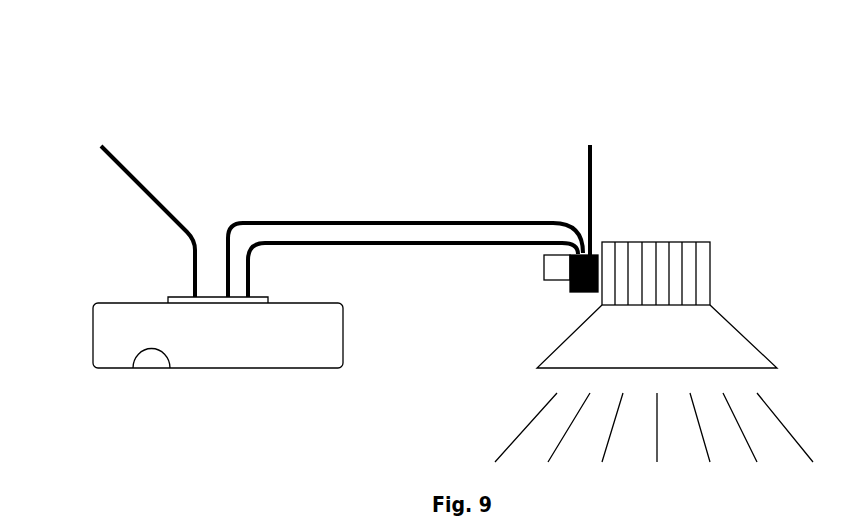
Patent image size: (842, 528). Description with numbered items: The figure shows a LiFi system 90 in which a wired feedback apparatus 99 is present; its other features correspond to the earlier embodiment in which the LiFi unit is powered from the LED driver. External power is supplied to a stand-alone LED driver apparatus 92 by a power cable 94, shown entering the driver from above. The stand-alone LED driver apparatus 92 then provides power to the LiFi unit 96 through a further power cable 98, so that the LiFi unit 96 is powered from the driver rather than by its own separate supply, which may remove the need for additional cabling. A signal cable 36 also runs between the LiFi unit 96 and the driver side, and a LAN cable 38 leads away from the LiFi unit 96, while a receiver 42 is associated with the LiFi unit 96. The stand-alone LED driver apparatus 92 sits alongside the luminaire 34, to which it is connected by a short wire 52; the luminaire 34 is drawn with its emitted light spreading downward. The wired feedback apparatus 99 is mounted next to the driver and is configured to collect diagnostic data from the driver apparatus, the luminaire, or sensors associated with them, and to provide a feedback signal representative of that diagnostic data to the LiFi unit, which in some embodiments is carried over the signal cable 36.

The LiFi system 90 is at (283, 113).
The LiFi unit 96 is at (93, 328).
The receiver 42 is at (140, 368).
The LAN cable 38 is at (150, 198).
The further power cable 98 is at (452, 222).
The signal cable 36 is at (442, 245).
The power cable 94 is at (588, 170).
The stand-alone LED driver apparatus 92 is at (570, 292).
The wired feedback apparatus 99 is at (544, 267).
The luminaire 34 is at (710, 270).
The short wire 52 is at (598, 305).